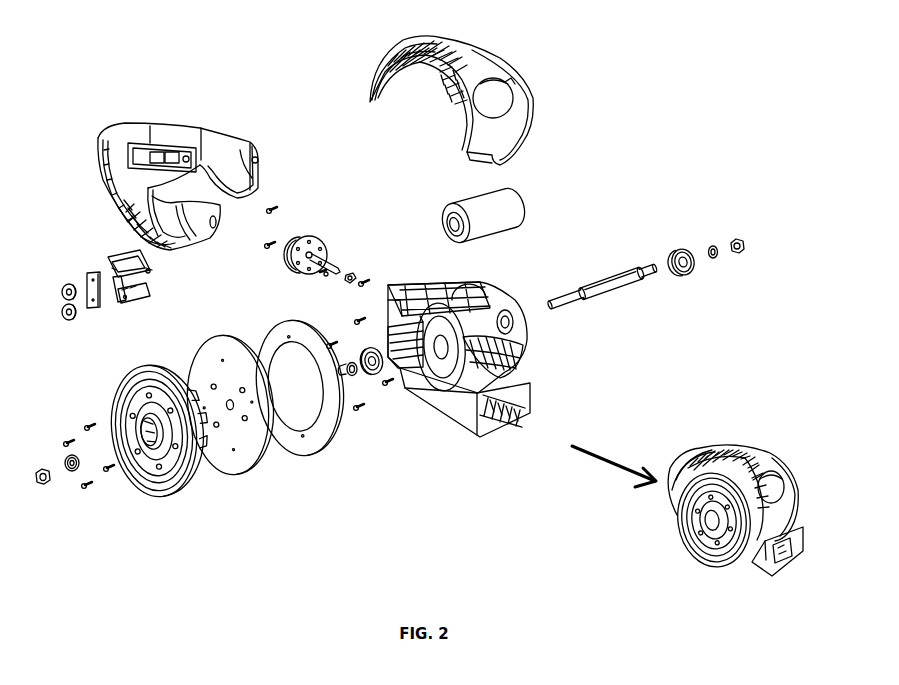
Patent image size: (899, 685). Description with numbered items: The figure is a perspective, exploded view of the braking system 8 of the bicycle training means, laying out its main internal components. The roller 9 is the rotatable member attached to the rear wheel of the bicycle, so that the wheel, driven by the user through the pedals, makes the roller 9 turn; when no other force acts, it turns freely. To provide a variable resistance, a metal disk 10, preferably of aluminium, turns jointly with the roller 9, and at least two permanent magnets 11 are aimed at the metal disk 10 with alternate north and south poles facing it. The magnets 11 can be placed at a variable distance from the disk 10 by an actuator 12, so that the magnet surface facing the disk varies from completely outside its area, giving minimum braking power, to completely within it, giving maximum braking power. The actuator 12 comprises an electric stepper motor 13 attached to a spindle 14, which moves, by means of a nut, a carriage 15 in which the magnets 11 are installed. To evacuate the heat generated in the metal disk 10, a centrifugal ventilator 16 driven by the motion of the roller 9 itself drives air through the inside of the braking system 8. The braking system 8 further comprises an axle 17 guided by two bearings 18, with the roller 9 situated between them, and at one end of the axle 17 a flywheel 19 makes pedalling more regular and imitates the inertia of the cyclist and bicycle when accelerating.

The braking system 8 is at (737, 434).
The roller 9 is at (514, 209).
The metal disk 10 is at (258, 455).
The permanent magnets 11 is at (64, 286).
The actuator 12 is at (333, 216).
The electric stepper motor 13 is at (290, 259).
The spindle 14 is at (328, 266).
The carriage 15 is at (108, 257).
The centrifugal ventilator 16 is at (190, 485).
The axle 17 is at (616, 293).
The bearings 18 is at (374, 388).
The flywheel 19 is at (322, 452).